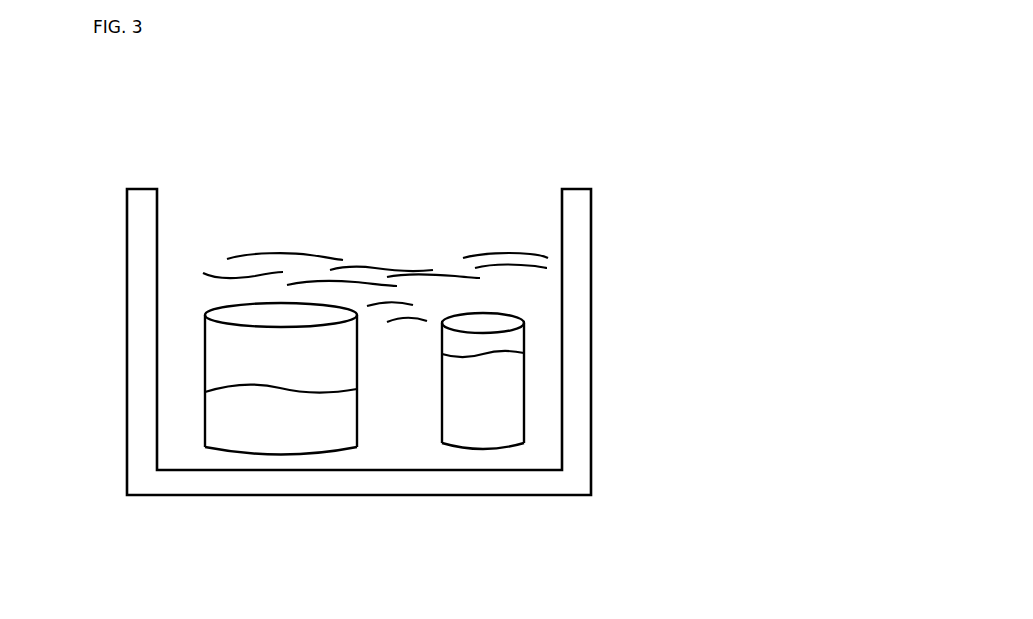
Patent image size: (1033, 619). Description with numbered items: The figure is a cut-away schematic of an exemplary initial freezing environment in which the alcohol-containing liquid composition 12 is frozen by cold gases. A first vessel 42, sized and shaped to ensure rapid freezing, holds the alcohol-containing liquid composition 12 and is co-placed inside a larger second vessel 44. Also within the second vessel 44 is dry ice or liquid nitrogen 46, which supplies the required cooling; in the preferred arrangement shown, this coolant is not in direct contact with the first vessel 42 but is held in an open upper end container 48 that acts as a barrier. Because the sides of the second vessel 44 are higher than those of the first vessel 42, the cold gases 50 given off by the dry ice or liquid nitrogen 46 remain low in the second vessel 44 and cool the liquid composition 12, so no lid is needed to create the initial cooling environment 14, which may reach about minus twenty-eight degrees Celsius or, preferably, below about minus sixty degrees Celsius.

The initial cooling environment 14 is at (421, 222).
The cold gases 50 is at (483, 248).
The second vessel 44 is at (592, 326).
The open upper end container 48 is at (205, 350).
The dry ice or liquid nitrogen 46 is at (261, 433).
The first vessel 42 is at (525, 373).
The alcohol-containing liquid composition 12 is at (499, 421).